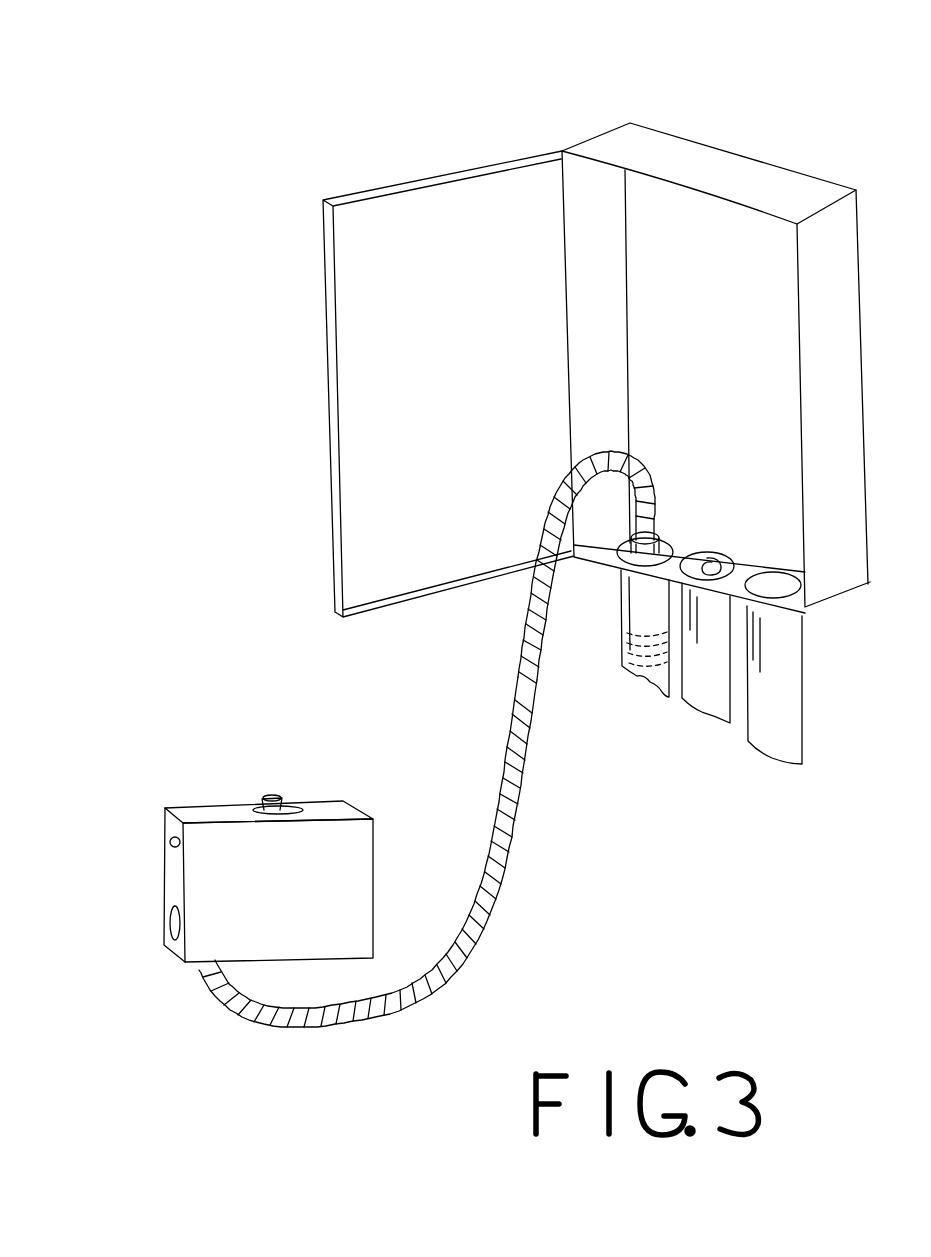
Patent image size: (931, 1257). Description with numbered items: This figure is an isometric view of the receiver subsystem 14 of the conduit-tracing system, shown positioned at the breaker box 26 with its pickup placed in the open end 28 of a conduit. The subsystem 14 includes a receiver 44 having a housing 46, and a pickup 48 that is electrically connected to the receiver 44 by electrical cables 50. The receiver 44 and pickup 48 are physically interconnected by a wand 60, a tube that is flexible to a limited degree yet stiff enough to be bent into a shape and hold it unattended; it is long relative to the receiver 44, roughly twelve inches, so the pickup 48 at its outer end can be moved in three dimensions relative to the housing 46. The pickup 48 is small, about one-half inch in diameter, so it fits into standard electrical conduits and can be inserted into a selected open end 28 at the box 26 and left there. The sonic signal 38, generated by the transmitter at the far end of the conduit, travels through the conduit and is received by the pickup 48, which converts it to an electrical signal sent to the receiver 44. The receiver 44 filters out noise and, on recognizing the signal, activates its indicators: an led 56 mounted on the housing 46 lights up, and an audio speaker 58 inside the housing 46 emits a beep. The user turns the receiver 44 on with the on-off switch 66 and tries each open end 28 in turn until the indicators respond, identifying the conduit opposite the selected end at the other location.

The receiver subsystem 14 is at (217, 606).
The breaker box 26 is at (730, 175).
The open end 28 is at (700, 555).
The sonic signal 38 is at (617, 640).
The receiver 44 is at (184, 795).
The receiver housing 46 is at (203, 873).
The pickup 48 is at (667, 523).
The electrical cables 50 is at (517, 667).
The led 56 is at (170, 841).
The audio speaker 58 is at (167, 927).
The wand 60 is at (507, 733).
The on-off switch 66 is at (275, 795).